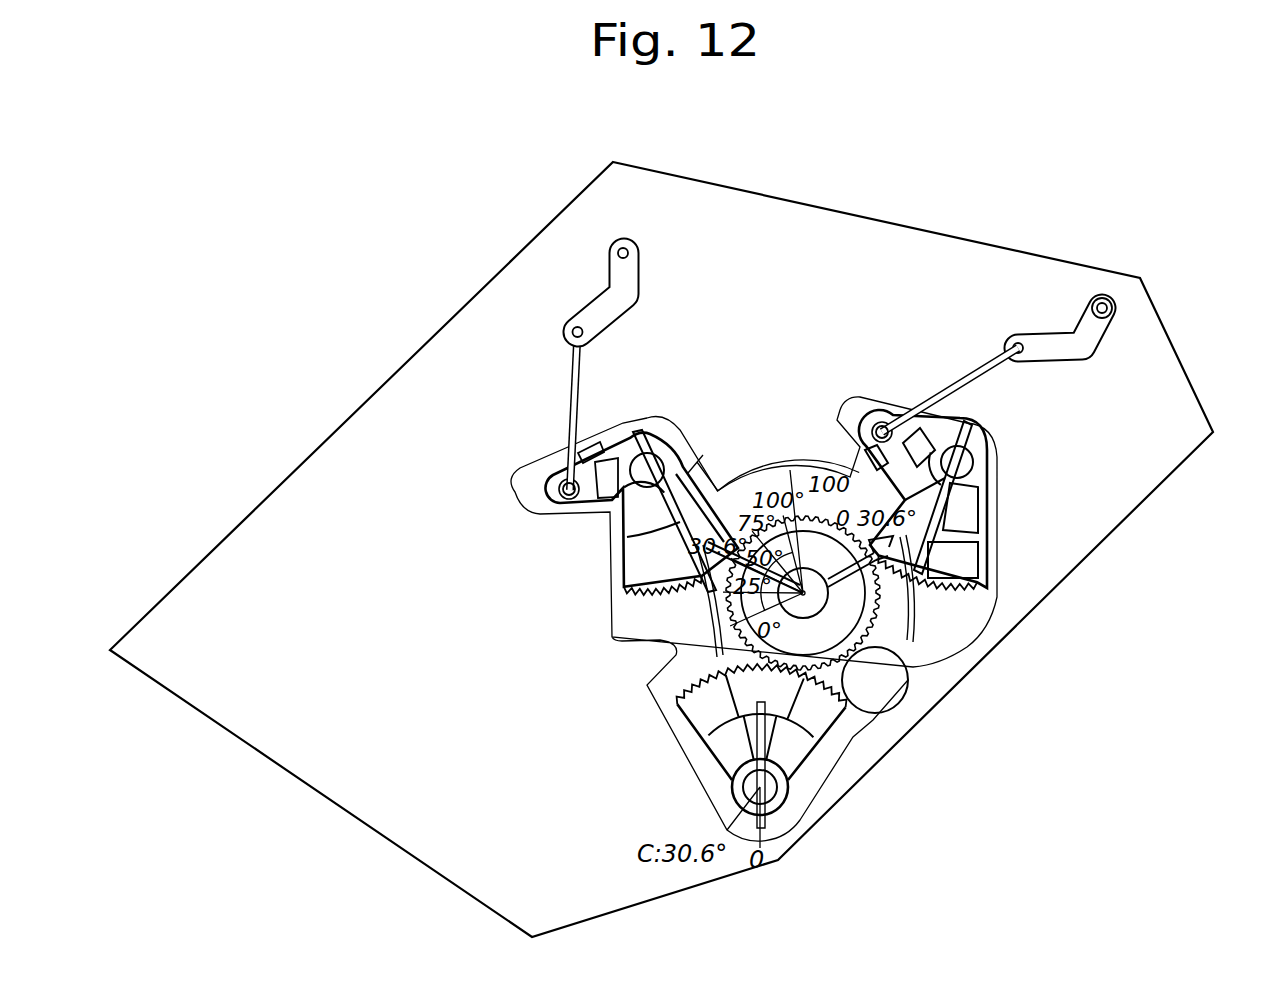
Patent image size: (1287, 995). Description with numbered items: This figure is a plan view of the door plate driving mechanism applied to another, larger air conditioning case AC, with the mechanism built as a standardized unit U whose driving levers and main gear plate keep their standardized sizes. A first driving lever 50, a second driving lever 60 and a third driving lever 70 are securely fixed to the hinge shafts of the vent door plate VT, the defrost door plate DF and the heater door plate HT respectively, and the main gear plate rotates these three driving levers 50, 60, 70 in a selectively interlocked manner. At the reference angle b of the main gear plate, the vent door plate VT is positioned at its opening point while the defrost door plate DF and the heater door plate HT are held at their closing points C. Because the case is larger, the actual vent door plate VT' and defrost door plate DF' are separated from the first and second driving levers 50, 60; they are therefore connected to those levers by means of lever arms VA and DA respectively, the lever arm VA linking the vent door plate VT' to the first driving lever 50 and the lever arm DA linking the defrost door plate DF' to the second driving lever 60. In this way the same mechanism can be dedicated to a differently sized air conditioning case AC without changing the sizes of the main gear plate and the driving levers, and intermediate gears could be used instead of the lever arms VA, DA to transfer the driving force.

The actuator cam assembly AC is at (465, 352).
The discharge fan crank DF' is at (690, 244).
The lever arm DA is at (578, 398).
The defrost door plate DF is at (678, 505).
The second driving lever 60 is at (641, 514).
The lever arm VA is at (953, 383).
The vent crank VT' is at (1139, 288).
The vent door plate VT is at (980, 497).
The first driving lever 50 is at (990, 508).
The mounting plate U is at (1003, 482).
The third driving lever 70 is at (850, 740).
The heater door plate HT is at (763, 800).
The closing point C is at (953, 563).
The reference angle b is at (803, 593).